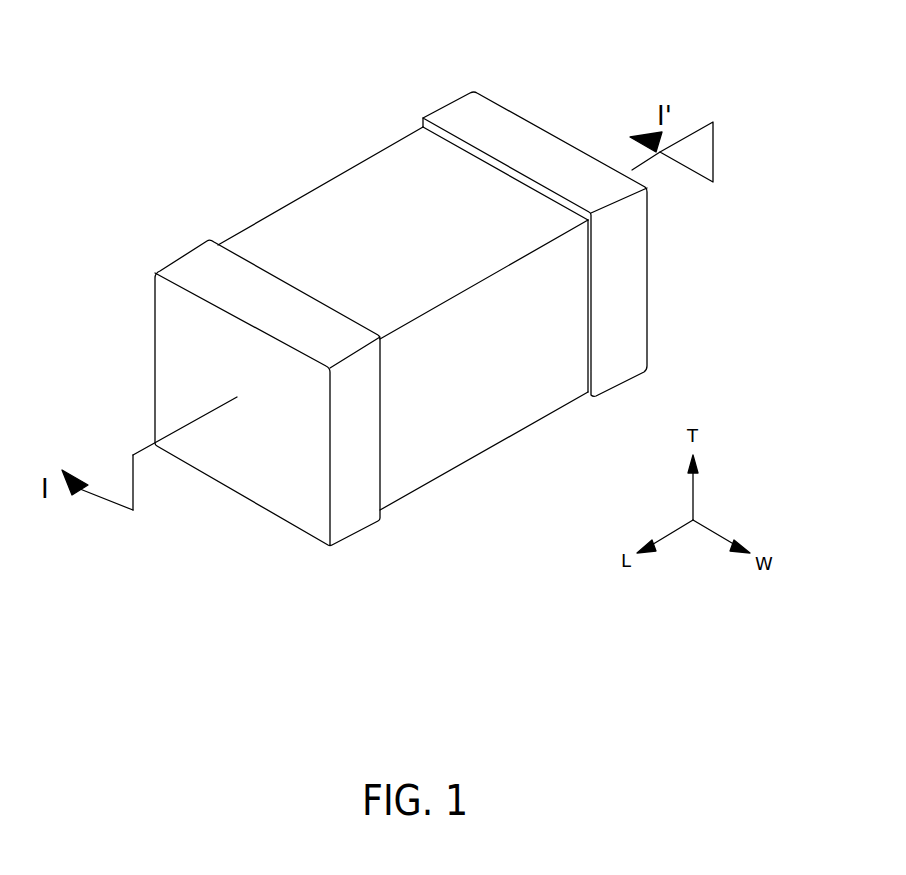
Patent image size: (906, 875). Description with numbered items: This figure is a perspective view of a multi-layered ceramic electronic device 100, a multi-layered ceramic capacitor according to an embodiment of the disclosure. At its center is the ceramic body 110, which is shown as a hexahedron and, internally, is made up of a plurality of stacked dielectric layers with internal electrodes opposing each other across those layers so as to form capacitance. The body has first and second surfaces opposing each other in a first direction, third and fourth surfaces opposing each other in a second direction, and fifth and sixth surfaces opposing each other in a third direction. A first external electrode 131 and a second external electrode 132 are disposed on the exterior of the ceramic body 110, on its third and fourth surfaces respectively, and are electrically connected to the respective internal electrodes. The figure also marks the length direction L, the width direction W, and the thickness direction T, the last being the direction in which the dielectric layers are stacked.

The multi-layered ceramic electronic device 100 is at (176, 50).
The ceramic body 110 is at (334, 197).
The first external electrode 131 is at (197, 260).
The second external electrode 132 is at (527, 133).